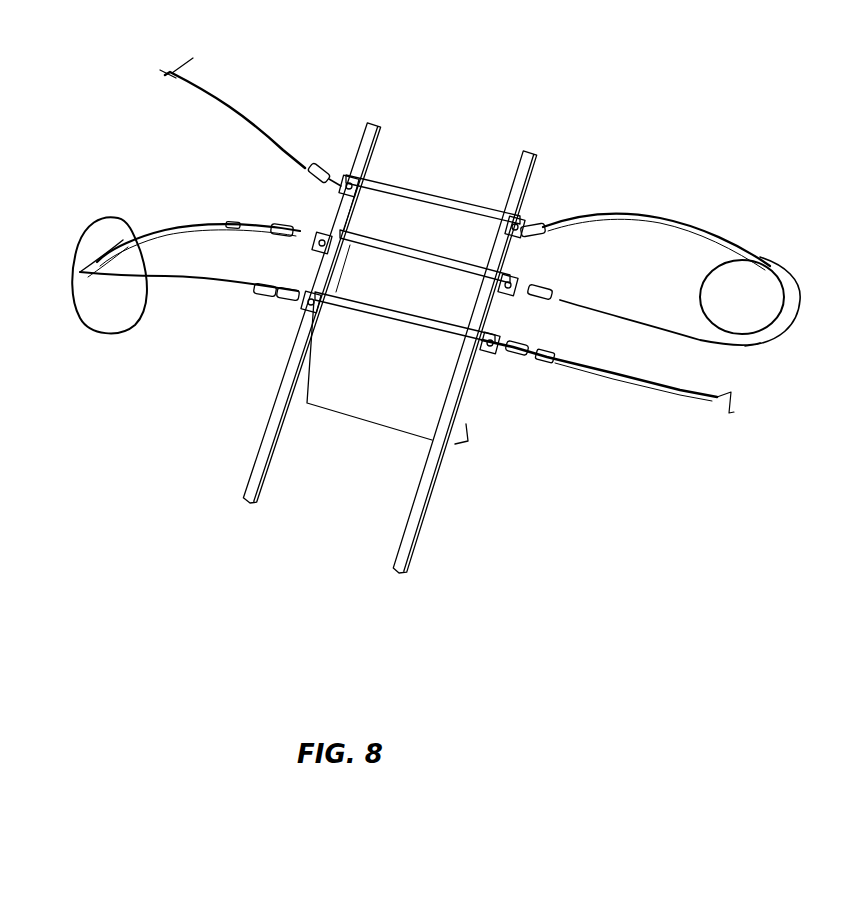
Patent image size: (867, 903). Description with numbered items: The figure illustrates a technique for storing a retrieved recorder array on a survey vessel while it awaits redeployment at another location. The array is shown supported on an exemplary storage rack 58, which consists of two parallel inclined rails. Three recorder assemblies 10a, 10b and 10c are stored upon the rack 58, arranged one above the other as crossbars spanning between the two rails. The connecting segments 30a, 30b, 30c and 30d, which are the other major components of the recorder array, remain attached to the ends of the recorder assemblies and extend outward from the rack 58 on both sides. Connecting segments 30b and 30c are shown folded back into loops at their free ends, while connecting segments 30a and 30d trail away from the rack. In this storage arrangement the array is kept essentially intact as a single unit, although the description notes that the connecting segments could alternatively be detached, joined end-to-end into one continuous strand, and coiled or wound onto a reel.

The storage rack 58 is at (393, 125).
The recorder assembly 10a is at (401, 368).
The recorder assembly 10b is at (425, 266).
The recorder assembly 10c is at (433, 209).
The connecting segment 30a is at (623, 387).
The connecting segment 30b is at (187, 283).
The connecting segment 30c is at (655, 217).
The connecting segment 30d is at (247, 113).